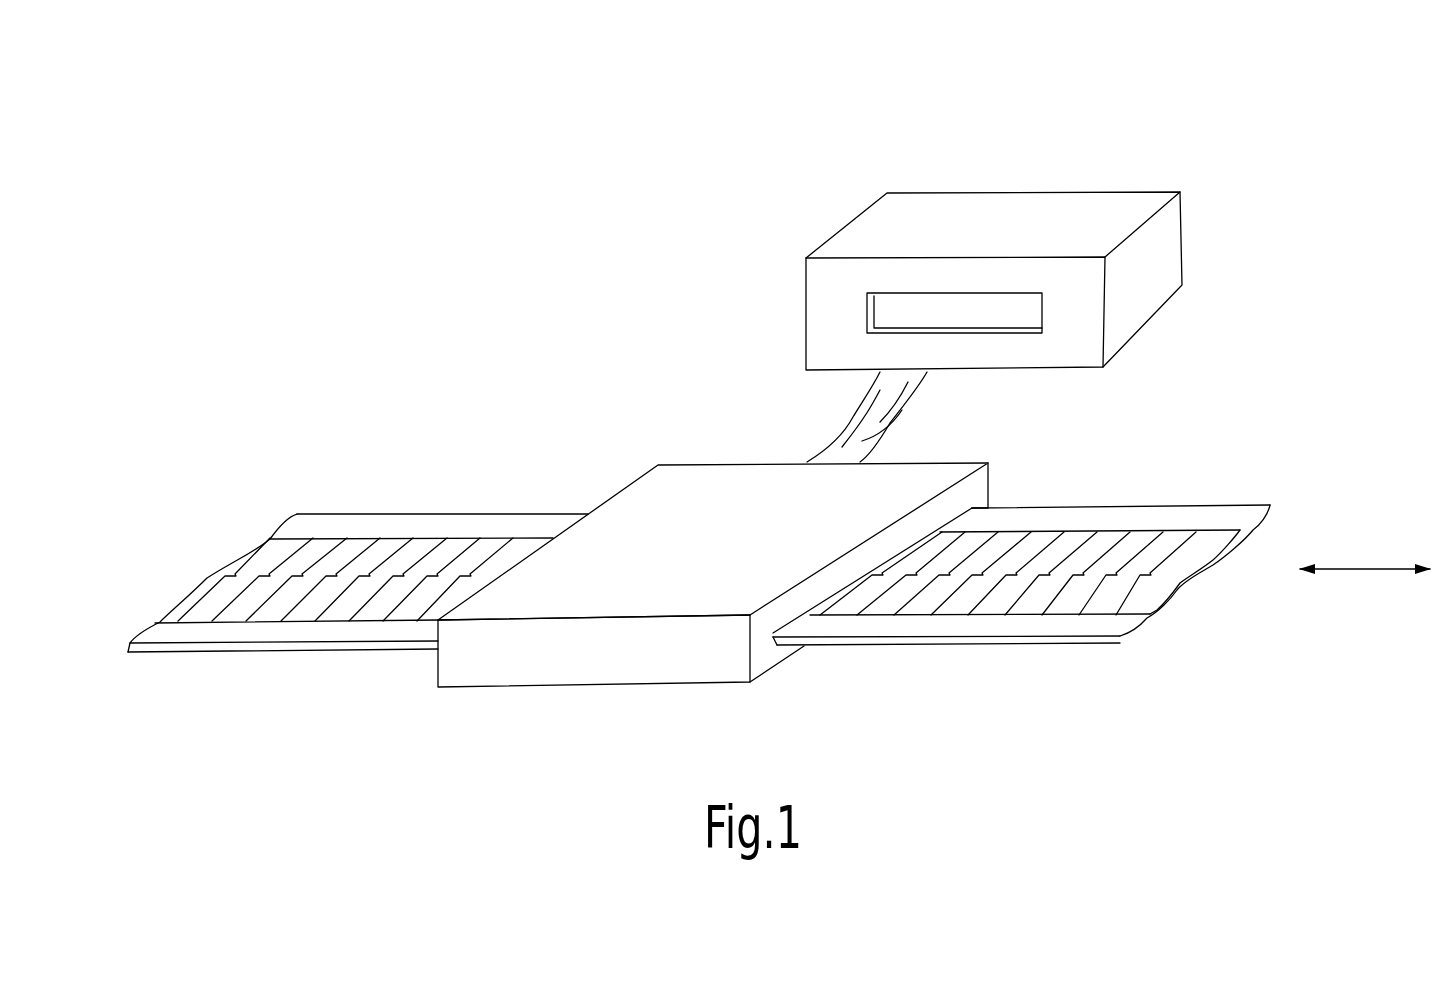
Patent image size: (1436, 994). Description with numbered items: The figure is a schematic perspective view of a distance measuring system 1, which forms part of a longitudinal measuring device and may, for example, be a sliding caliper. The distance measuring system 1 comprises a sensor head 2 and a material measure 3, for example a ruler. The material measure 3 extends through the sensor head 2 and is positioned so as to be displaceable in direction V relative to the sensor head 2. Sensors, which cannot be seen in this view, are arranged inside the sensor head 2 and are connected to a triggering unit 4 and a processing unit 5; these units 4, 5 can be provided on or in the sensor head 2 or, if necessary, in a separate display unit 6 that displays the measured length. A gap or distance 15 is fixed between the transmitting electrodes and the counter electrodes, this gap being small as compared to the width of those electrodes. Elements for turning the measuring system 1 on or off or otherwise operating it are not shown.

The distance measuring system 1 is at (375, 208).
The sensor head 2 is at (674, 452).
The material measure 3 is at (400, 480).
The triggering unit 4 is at (780, 297).
The processing unit 5 is at (1203, 251).
The display unit 6 is at (977, 313).
The gap 15 is at (915, 547).
The direction V is at (1375, 568).